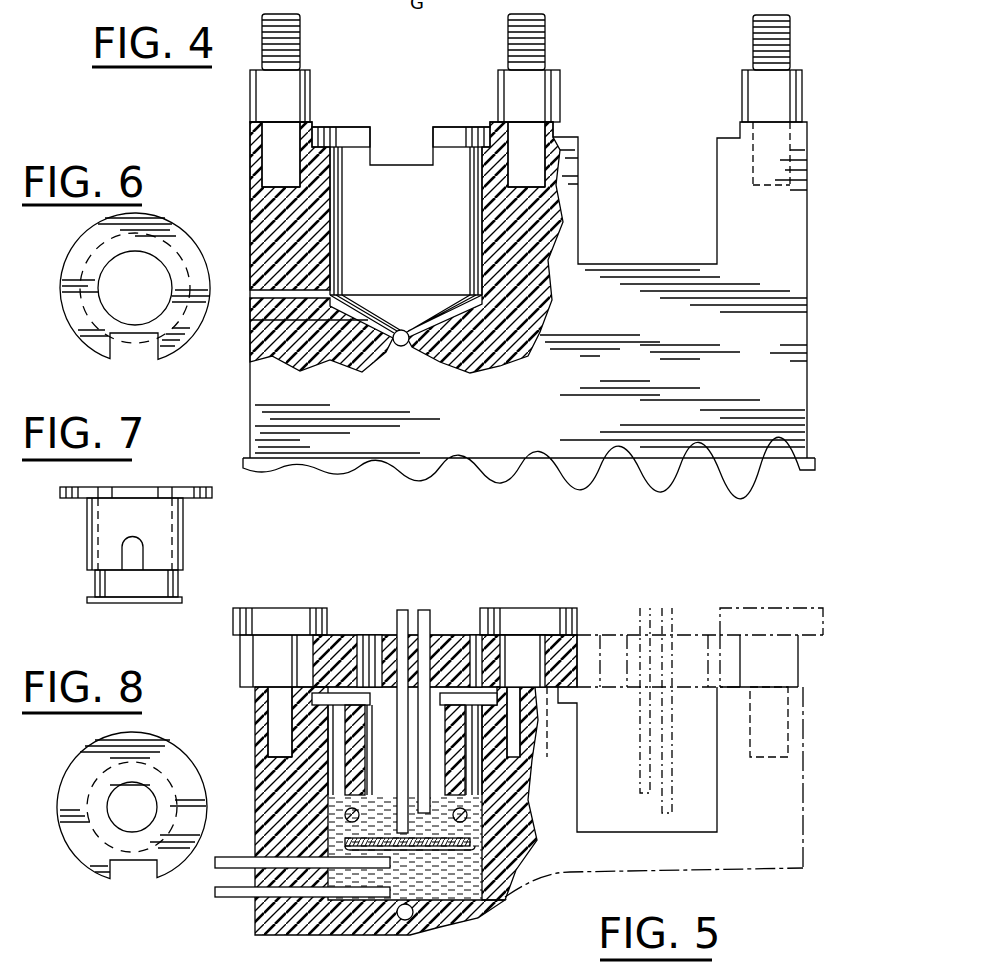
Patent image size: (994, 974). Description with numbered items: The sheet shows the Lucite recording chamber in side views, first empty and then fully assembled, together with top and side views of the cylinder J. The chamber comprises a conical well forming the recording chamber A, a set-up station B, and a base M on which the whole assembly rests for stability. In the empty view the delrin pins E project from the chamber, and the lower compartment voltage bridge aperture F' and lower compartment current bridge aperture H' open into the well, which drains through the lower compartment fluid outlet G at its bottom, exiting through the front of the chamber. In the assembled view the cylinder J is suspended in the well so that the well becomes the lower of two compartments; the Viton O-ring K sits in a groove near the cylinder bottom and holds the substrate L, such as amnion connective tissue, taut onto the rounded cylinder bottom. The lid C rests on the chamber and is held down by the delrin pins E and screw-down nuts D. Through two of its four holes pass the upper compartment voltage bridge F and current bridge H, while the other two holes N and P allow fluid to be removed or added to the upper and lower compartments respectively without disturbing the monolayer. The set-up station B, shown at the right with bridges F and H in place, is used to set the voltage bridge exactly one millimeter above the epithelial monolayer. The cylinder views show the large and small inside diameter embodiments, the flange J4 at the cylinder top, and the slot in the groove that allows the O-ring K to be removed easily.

In FIG. 4, the recording chamber A is at (412, 218).
In FIG. 5, the recording chamber A is at (343, 770).
In FIG. 4, the set-up station B is at (658, 216).
In FIG. 5, the set-up station B is at (615, 765).
In FIG. 5, the lid C is at (240, 660).
In FIG. 5, the screw-down nut D is at (280, 606).
In FIG. 4, the delrin pin E is at (290, 48).
In FIG. 5, the delrin pin E is at (282, 668).
In FIG. 5, the voltage bridge F is at (528, 697).
In FIG. 5, the current bridge H is at (558, 687).
In FIG. 4, the lower compartment voltage bridge aperture F' is at (348, 278).
In FIG. 5, the lower compartment voltage bridge aperture F' is at (302, 840).
In FIG. 4, the lower compartment current bridge aperture H' is at (406, 298).
In FIG. 5, the lower compartment current bridge aperture H' is at (301, 917).
In FIG. 4, the lower compartment fluid outlet G is at (405, 330).
In FIG. 5, the lower compartment fluid outlet G is at (405, 921).
In FIG. 6, the cylinder J is at (190, 237).
In FIG. 7, the cylinder J is at (178, 533).
In FIG. 8, the cylinder J is at (190, 772).
In FIG. 5, the cylinder J is at (447, 770).
In FIG. 4, the plug insert flange J4 is at (401, 137).
In FIG. 5, the Viton O-ring K is at (462, 818).
In FIG. 5, the substrate L is at (470, 843).
In FIG. 4, the base plate M is at (428, 466).
In FIG. 5, the upper compartment fluid aperture N is at (352, 633).
In FIG. 5, the lower compartment fluid aperture P is at (470, 633).